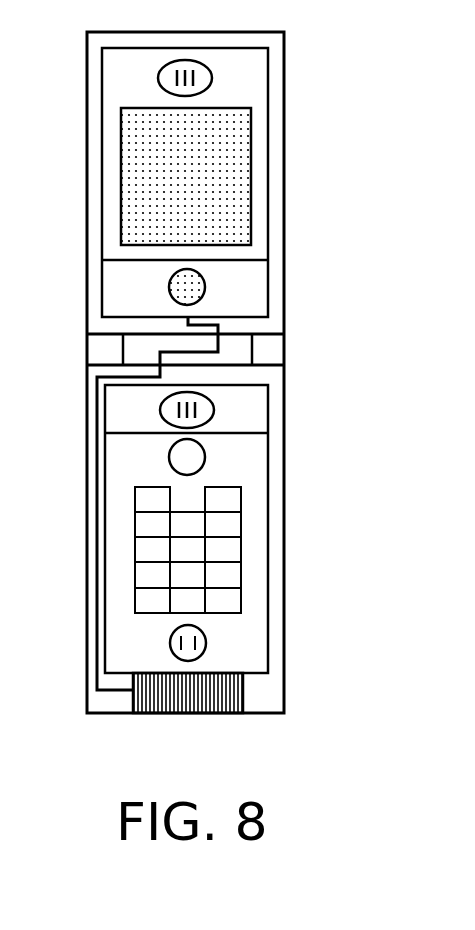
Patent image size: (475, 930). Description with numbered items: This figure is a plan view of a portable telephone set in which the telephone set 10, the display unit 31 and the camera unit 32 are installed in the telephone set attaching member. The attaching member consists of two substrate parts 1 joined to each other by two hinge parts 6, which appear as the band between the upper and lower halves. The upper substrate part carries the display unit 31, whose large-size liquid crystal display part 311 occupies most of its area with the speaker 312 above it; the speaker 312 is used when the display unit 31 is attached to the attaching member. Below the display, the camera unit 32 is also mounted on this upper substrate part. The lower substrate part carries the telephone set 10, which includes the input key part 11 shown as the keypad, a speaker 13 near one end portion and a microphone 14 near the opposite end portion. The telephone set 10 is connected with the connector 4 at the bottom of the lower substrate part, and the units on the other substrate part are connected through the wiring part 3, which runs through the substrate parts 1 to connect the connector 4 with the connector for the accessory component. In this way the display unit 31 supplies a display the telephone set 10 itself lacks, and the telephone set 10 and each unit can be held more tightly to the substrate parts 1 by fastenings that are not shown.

The substrate part 1 is at (87, 92).
The wiring part 3 is at (88, 392).
The connector 4 is at (217, 713).
The hinge part 6 is at (284, 334).
The telephone set 10 is at (262, 457).
The input key part 11 is at (241, 520).
The speaker 13 is at (214, 410).
The microphone 14 is at (206, 643).
The display unit 31 is at (268, 117).
The liquid crystal display part 311 is at (213, 185).
The speaker 312 is at (212, 76).
The camera unit 32 is at (268, 270).